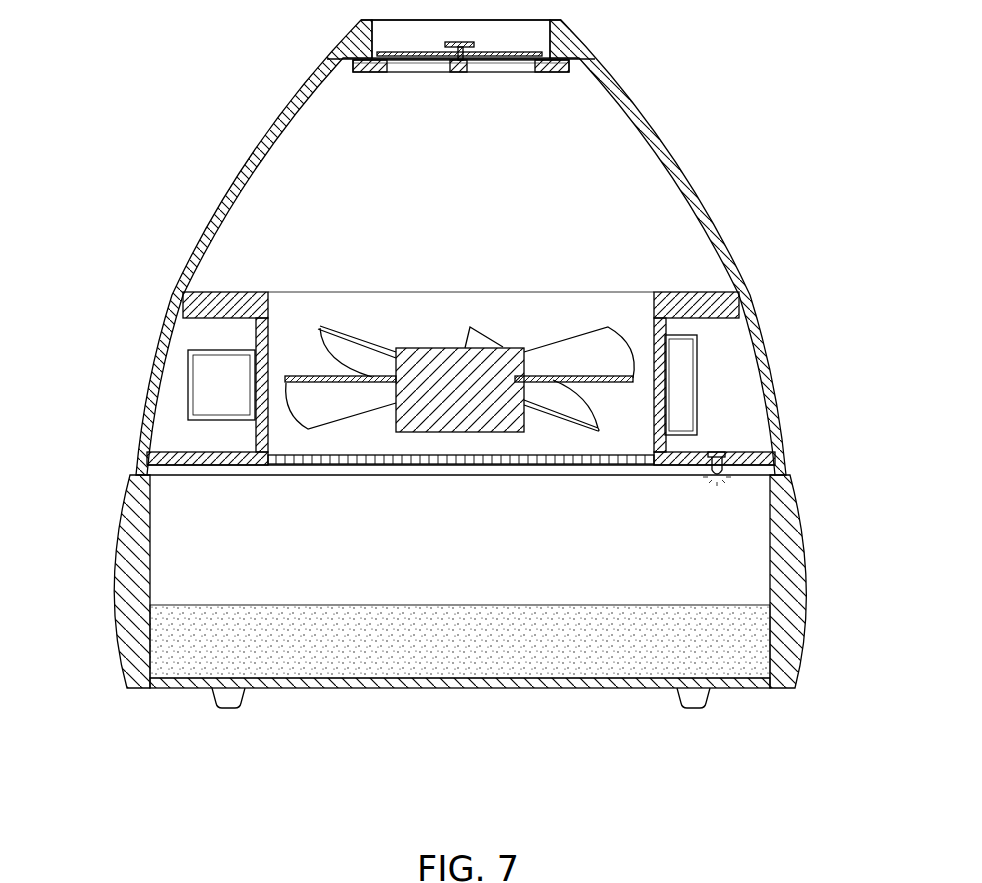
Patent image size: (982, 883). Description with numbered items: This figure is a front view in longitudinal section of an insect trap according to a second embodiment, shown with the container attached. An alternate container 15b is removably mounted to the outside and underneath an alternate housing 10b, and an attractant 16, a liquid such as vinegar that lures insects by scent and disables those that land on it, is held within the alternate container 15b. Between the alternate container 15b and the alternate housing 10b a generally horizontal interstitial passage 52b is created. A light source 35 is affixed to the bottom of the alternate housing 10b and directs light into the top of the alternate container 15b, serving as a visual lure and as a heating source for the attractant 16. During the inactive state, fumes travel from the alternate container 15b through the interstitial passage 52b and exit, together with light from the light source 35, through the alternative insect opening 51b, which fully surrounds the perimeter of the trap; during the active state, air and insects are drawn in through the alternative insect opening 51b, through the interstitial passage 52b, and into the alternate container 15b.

The alternate housing 10b is at (167, 308).
The alternative insect opening 51b is at (100, 440).
The interstitial passage 52b is at (158, 464).
The light source 35 is at (718, 450).
The alternate container 15b is at (807, 595).
The attractant 16 is at (747, 658).